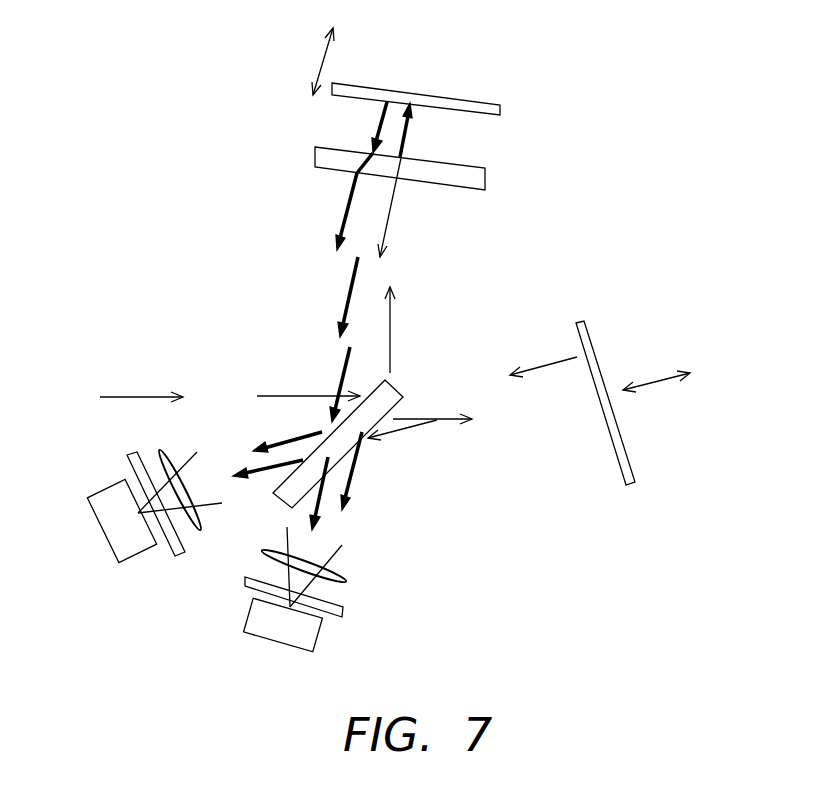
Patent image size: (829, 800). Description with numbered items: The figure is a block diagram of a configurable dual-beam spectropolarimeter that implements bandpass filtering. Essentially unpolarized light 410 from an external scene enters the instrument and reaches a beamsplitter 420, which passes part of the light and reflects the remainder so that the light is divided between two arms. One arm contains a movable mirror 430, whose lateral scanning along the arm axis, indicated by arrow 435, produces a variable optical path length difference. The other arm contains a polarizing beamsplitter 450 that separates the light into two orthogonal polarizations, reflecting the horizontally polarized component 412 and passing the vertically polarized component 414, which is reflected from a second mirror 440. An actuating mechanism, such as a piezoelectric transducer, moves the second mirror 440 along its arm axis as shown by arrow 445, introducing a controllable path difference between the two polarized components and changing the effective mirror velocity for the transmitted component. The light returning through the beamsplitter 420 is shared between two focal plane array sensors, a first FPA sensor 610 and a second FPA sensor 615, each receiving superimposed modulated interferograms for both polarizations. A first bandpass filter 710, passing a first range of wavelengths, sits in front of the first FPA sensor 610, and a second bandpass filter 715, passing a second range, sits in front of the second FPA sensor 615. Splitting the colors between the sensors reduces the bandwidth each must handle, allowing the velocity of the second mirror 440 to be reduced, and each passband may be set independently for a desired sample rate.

The light 410 is at (123, 397).
The horizontally polarized component 412 is at (388, 218).
The vertically polarized component 414 is at (407, 142).
The beamsplitter 420 is at (396, 386).
The movable mirror 430 is at (582, 323).
The arrow 435 is at (667, 382).
The second mirror 440 is at (463, 100).
The arrow 445 is at (322, 60).
The polarizing beamsplitter 450 is at (483, 173).
The first FPA sensor 610 is at (243, 628).
The second FPA sensor 615 is at (102, 488).
The first bandpass filter 710 is at (347, 607).
The second bandpass filter 715 is at (180, 553).